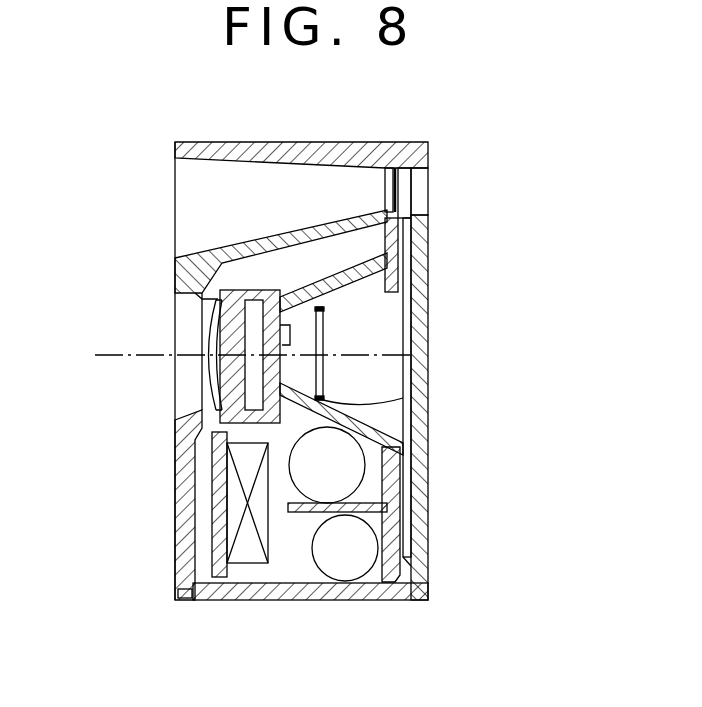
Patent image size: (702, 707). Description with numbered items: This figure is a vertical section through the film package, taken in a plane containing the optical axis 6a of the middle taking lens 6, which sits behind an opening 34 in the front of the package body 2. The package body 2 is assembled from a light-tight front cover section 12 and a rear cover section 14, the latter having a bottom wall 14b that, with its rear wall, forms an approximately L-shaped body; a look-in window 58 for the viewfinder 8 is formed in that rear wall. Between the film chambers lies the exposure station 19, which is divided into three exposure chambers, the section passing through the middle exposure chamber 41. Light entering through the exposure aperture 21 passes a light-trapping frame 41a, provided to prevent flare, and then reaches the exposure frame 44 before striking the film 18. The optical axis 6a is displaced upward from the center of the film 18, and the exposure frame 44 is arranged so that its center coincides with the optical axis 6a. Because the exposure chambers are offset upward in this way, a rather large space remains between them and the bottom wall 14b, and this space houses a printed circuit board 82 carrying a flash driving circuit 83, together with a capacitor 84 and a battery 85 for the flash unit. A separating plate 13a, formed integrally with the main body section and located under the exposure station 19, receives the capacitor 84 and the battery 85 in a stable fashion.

The package body 2 is at (286, 139).
The viewfinder 8 is at (207, 250).
The look-in window 58 is at (428, 197).
The exposure frame 44 is at (408, 295).
The exposure station 19 is at (330, 271).
The middle taking lens 6 is at (220, 335).
The optical axis 6a is at (133, 352).
The opening 34 is at (212, 370).
The exposure aperture 21 is at (281, 357).
The film 18 is at (407, 340).
The light-trapping frame 41a is at (412, 398).
The middle exposure chamber 41 is at (400, 418).
The front cover section 12 is at (162, 443).
The capacitor 84 is at (357, 468).
The rear cover section 14 is at (432, 543).
The printed circuit board 82 is at (212, 530).
The flash driving circuit 83 is at (228, 578).
The separating plate 13a is at (292, 514).
The battery 85 is at (333, 572).
The bottom wall 14b is at (371, 600).